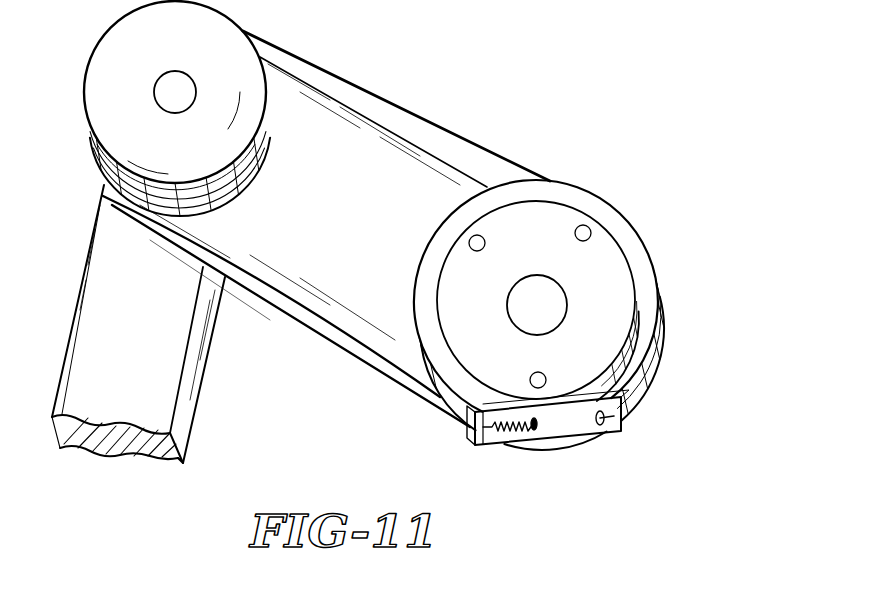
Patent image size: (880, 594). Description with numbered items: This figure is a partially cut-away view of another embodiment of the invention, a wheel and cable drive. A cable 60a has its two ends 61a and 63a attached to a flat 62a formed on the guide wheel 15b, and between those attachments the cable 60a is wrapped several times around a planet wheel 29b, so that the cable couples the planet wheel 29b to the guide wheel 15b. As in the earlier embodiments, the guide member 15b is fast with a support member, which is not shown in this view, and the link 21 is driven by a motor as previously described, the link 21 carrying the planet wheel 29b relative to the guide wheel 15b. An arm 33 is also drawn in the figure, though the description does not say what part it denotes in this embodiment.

The planet wheel 29b is at (222, 33).
The support arm 33 is at (155, 400).
The cable 60a is at (495, 152).
The link 21 is at (347, 234).
The guide wheel 15b is at (608, 323).
The flat 62a is at (645, 390).
The cable end 61a is at (533, 430).
The cable end 63a is at (603, 424).